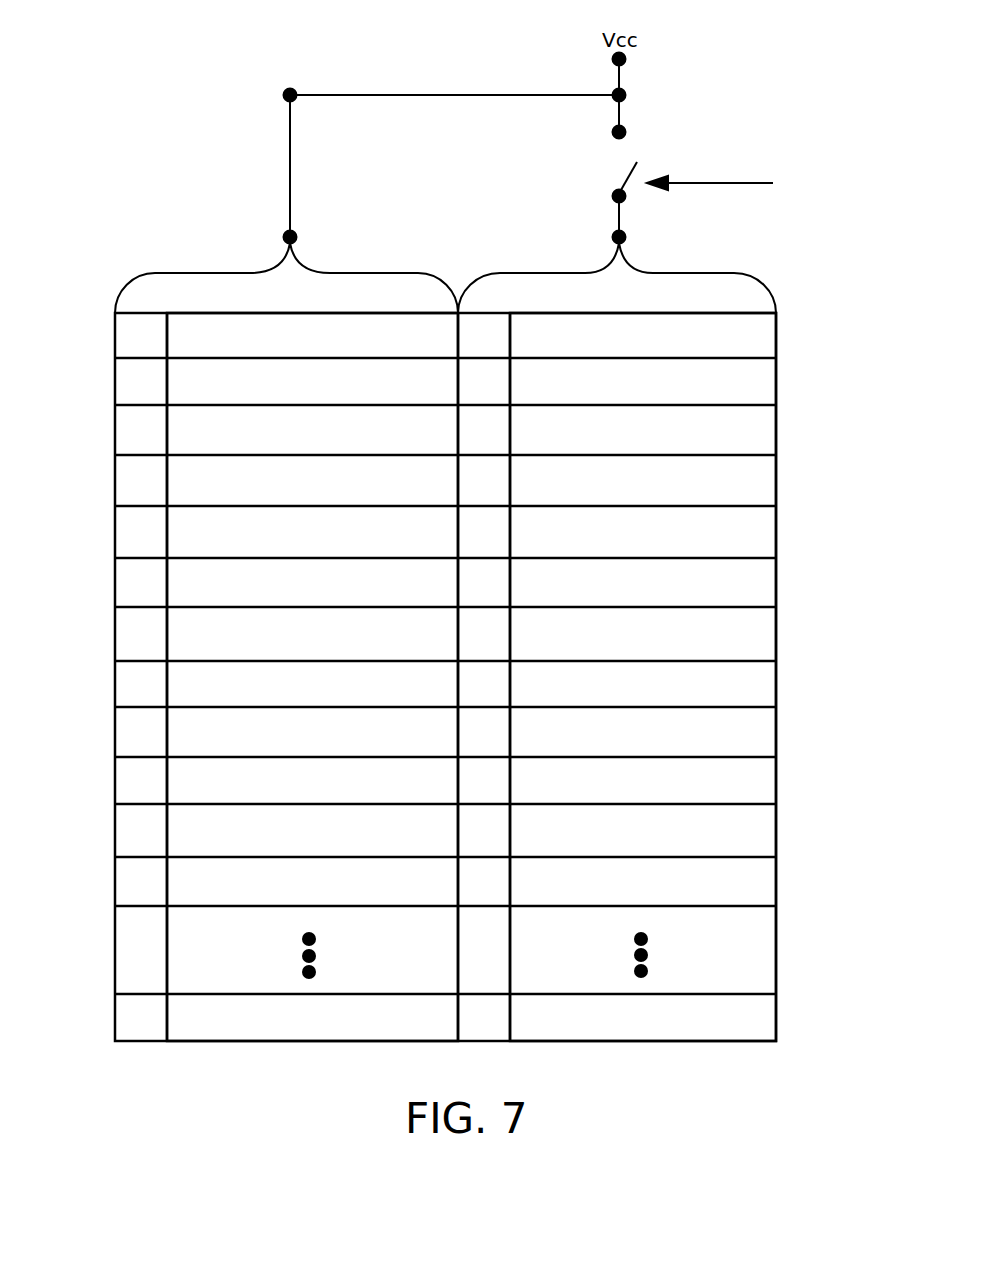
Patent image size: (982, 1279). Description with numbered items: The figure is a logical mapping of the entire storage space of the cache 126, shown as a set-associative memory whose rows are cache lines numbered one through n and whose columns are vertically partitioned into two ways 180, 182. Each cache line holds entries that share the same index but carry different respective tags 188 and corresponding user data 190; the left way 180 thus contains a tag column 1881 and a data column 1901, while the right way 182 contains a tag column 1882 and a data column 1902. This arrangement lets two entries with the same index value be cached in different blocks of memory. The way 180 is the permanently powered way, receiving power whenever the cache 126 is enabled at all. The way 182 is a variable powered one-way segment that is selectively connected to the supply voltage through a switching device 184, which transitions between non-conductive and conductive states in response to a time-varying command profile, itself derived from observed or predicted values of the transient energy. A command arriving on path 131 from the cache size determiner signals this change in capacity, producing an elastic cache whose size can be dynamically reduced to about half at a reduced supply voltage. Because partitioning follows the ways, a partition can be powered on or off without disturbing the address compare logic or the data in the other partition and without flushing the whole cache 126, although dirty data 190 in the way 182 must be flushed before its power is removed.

The cache 126 is at (158, 201).
The path 131 is at (723, 190).
The way 180 is at (265, 268).
The way 182 is at (695, 273).
The switching device 184 is at (614, 131).
The tags 188 is at (291, 635).
The tag 1881 is at (146, 313).
The tag 1882 is at (491, 312).
The user data 190 is at (494, 634).
The user data 1901 is at (360, 311).
The user data 1902 is at (746, 312).